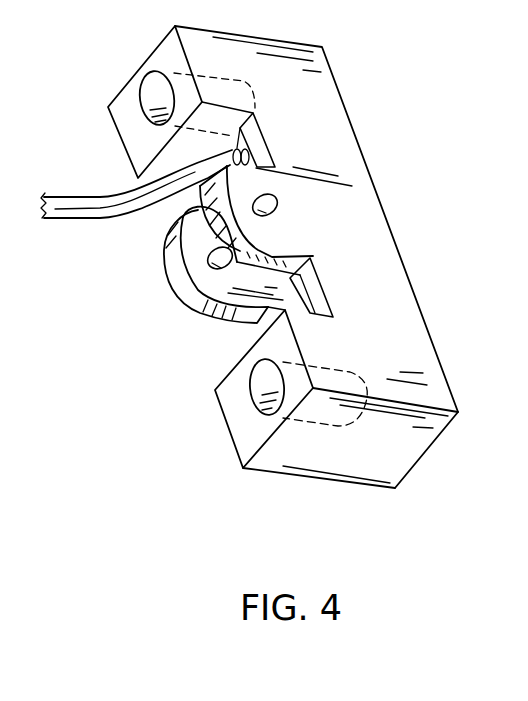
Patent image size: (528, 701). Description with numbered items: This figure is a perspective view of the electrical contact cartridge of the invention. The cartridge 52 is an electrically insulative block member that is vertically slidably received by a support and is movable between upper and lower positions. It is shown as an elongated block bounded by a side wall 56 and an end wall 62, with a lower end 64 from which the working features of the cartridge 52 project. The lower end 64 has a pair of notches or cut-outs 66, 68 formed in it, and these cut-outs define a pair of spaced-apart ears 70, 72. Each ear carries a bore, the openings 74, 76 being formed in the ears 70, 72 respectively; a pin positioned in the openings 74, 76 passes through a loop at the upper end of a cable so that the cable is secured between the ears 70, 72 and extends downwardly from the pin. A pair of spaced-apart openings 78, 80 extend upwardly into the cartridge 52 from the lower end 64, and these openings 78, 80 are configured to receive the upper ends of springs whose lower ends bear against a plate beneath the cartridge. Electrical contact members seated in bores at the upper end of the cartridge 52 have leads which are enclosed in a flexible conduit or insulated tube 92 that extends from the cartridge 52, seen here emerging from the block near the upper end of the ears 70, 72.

The cartridge 52 is at (437, 334).
The side wall 56 is at (348, 232).
The end wall 62 is at (298, 399).
The lower end 64 is at (296, 255).
The notch 66 is at (258, 148).
The notch 68 is at (312, 296).
The ear 70 is at (258, 180).
The ear 72 is at (167, 286).
The opening 74 is at (273, 202).
The opening 76 is at (210, 255).
The opening 78 is at (150, 92).
The opening 80 is at (262, 388).
The insulated tube 92 is at (102, 195).